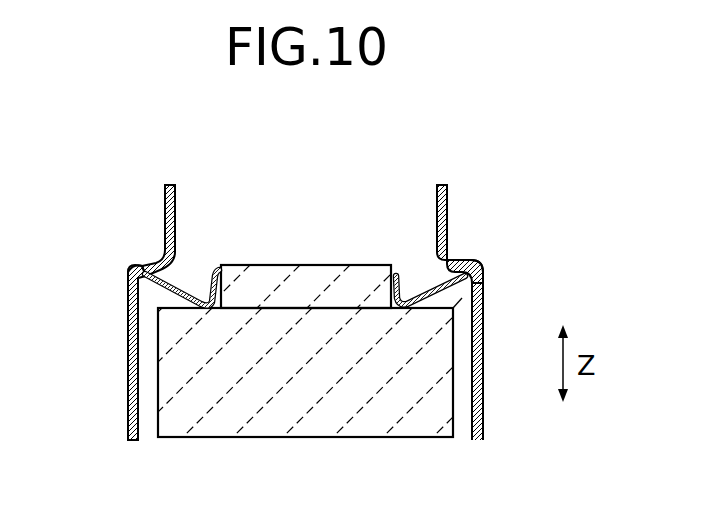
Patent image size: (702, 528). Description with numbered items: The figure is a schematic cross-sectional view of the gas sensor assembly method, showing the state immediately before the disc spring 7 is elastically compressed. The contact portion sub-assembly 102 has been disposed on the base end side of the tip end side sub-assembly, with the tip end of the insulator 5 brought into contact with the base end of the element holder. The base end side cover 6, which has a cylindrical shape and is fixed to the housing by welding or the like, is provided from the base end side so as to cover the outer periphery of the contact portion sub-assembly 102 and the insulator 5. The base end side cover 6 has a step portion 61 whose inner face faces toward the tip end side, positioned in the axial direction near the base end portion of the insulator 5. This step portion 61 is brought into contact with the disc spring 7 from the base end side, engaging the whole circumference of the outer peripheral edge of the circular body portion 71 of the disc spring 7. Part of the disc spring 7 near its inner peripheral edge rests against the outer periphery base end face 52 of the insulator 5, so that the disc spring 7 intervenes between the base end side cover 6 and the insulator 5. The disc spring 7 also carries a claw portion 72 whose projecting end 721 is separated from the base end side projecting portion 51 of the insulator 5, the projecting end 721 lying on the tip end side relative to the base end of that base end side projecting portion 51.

The insulator 5 is at (277, 425).
The base end side projecting portion 51 is at (311, 265).
The outer periphery base end face 52 is at (452, 310).
The base end side cover 6 is at (253, 305).
The step portion 61 is at (152, 270).
The disc spring 7 is at (329, 194).
The circular body portion 71 is at (450, 268).
The claw portion 72 is at (210, 286).
The projecting end 721 is at (216, 278).
The contact portion sub-assembly 102 is at (208, 422).